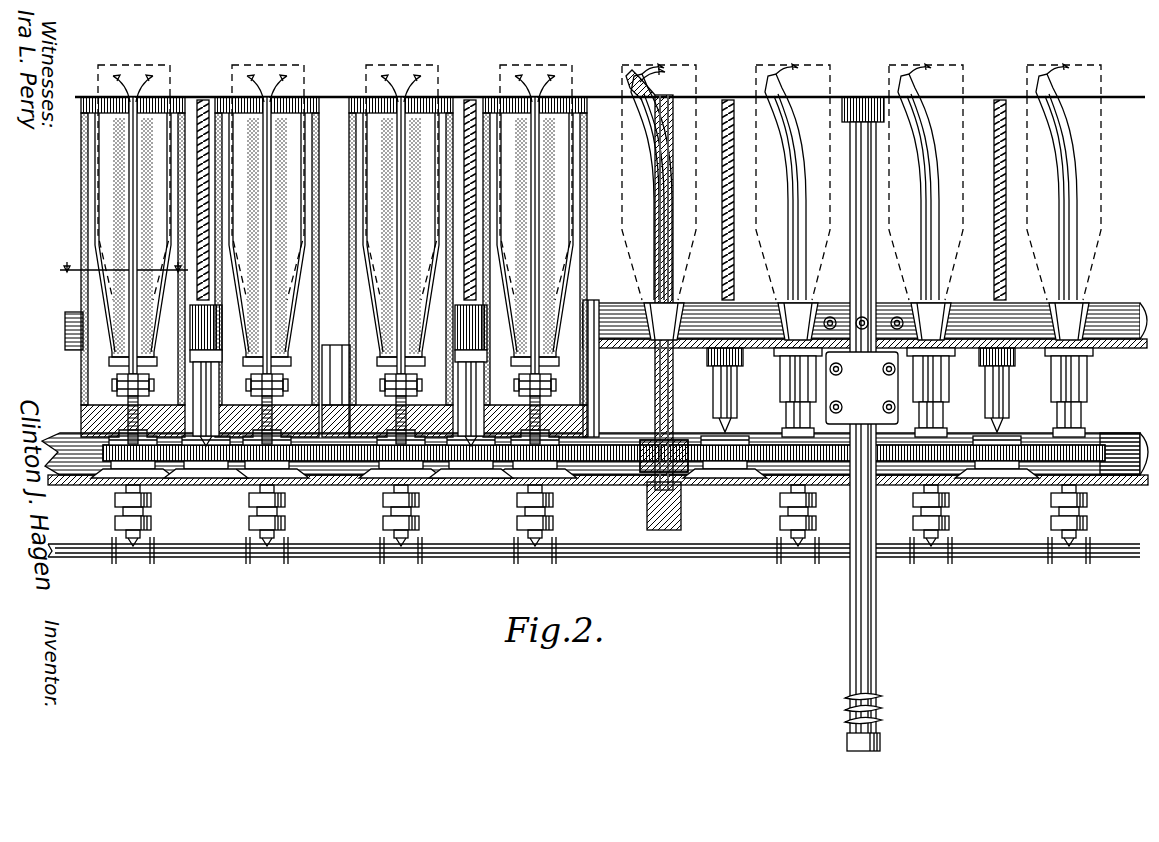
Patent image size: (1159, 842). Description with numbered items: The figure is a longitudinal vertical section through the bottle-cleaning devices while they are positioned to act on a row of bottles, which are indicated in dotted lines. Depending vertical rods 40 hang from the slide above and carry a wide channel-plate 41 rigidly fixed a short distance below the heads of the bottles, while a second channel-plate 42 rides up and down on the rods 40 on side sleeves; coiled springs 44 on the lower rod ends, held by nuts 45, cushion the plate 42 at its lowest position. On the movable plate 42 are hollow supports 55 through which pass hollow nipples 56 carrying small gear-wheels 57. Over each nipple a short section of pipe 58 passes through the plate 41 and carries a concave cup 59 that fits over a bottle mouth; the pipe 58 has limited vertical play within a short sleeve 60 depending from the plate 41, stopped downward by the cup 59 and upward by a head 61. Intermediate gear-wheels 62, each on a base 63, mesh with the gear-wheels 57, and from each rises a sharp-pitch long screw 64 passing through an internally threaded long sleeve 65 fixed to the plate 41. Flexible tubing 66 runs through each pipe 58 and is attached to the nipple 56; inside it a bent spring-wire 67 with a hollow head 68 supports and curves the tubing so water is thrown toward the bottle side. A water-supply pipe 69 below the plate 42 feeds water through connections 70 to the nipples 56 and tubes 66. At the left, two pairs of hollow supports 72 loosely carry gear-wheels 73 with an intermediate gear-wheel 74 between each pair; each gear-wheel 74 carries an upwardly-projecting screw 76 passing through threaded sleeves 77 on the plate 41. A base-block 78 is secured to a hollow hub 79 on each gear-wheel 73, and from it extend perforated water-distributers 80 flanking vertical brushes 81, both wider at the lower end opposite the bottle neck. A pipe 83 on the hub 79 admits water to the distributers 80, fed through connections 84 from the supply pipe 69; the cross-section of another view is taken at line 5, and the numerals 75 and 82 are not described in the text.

The section line 5 is at (116, 267).
The depending vertical rods 40 is at (870, 645).
The wide channel-plate 41 is at (598, 350).
The vertically-movable channel-plate 42 is at (598, 485).
The coiled springs 44 is at (882, 710).
The nuts 45 is at (866, 751).
The hollow supports 55 is at (645, 486).
The hollow nipples 56 is at (682, 490).
The small gear-wheels 57 is at (610, 445).
The short section of pipe 58 is at (690, 305).
The concave cup 59 is at (808, 300).
The short sleeve 60 is at (678, 392).
The head 61 is at (676, 418).
The gear-wheels 62 is at (685, 445).
The base 63 is at (735, 472).
The long screw 64 is at (735, 270).
The long sleeve 65 is at (737, 385).
The flexible tubing 66 is at (655, 200).
The spring-wire 67 is at (660, 135).
The hollow head 68 is at (648, 92).
The water-supply pipe 69 is at (1002, 557).
The connections 70 is at (680, 512).
The hollow supports 72 is at (115, 478).
The gear-wheel 73 is at (85, 478).
The intermediate gear-wheel 74 is at (165, 478).
The bushing 75 is at (205, 480).
The upwardly-projecting screw 76 is at (205, 105).
The screw-threaded sleeves 77 is at (210, 398).
The base-block 78 is at (88, 420).
The hollow hub 79 is at (150, 378).
The water-distributer 80 is at (334, 251).
The vertically-arranged brushes 81 is at (150, 112).
The discharge arrows 82 is at (150, 85).
The pipe 83 is at (115, 382).
The connections 84 is at (152, 516).